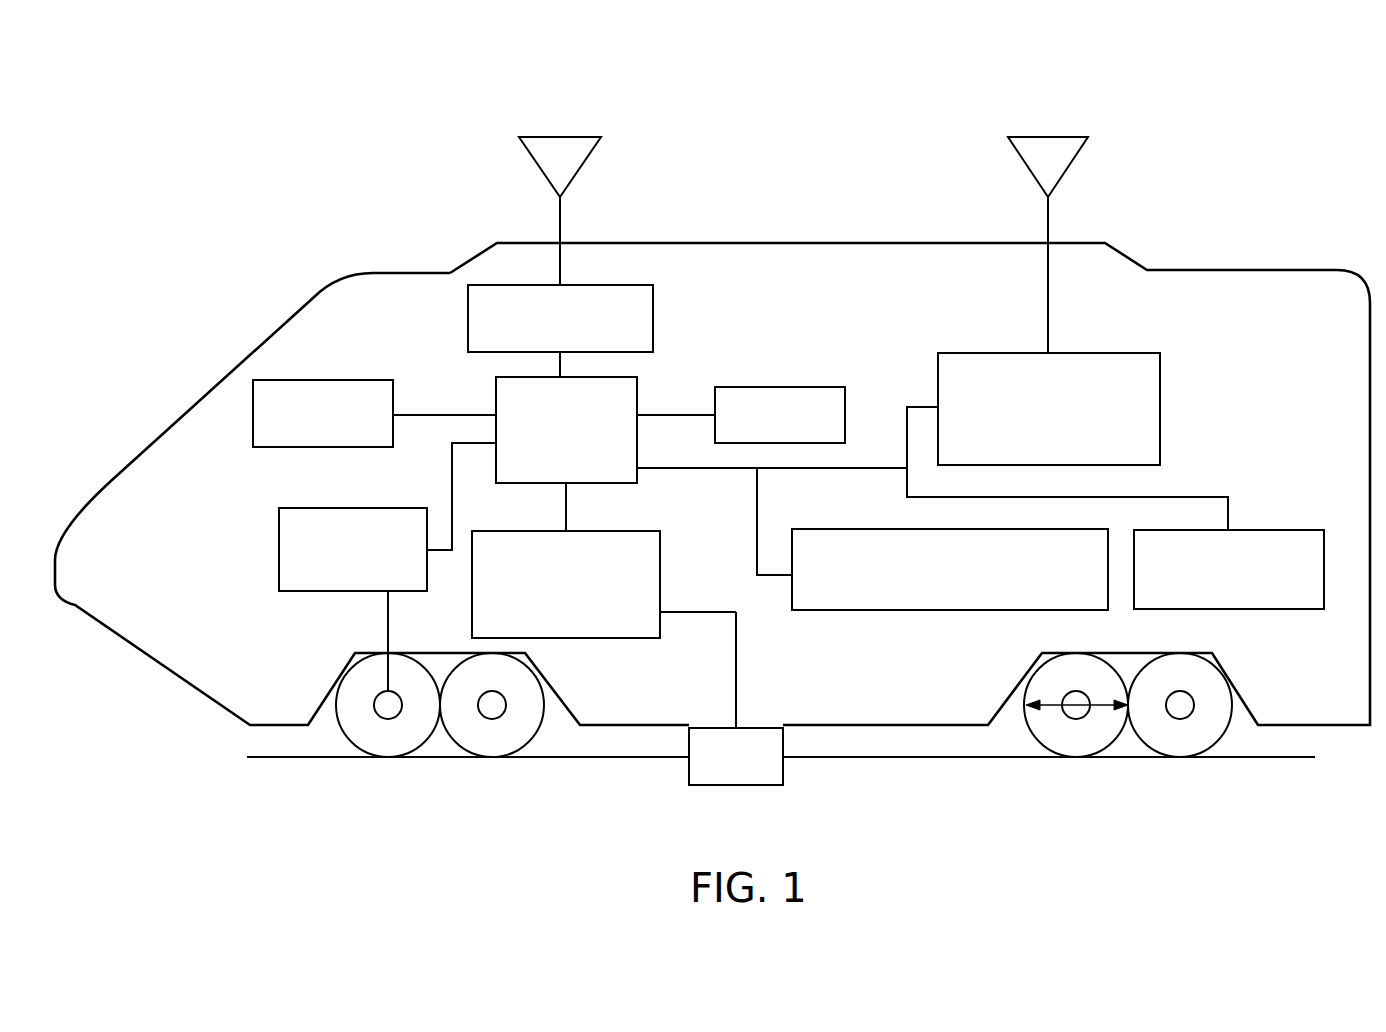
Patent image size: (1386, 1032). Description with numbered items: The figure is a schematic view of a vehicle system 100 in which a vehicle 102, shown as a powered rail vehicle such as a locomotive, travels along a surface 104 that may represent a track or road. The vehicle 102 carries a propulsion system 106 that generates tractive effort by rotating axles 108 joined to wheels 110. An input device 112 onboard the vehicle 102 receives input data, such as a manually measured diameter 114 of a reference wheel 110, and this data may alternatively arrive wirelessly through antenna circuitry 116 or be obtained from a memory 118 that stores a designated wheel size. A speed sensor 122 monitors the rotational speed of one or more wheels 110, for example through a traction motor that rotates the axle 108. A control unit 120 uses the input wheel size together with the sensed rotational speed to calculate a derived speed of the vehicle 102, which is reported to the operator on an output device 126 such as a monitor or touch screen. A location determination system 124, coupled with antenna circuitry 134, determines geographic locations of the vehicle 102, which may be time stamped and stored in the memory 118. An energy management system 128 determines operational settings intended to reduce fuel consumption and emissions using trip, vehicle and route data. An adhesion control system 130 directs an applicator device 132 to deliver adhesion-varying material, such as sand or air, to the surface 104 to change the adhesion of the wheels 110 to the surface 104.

The vehicle system 100 is at (1210, 110).
The vehicle 102 is at (1253, 270).
The surface 104 is at (1268, 758).
The propulsion system 106 is at (1277, 530).
The axle 108 is at (388, 720).
The wheel 110 is at (525, 748).
The input device 112 is at (653, 313).
The diameter 114 is at (1098, 720).
The antenna circuitry 116 is at (598, 143).
The memory 118 is at (770, 387).
The control unit 120 is at (640, 393).
The speed sensor 122 is at (279, 547).
The location determination system 124 is at (1160, 403).
The output device 126 is at (323, 379).
The energy management system 128 is at (948, 610).
The adhesion control system 130 is at (660, 545).
The applicator device 132 is at (783, 775).
The antenna circuitry 134 is at (1073, 166).